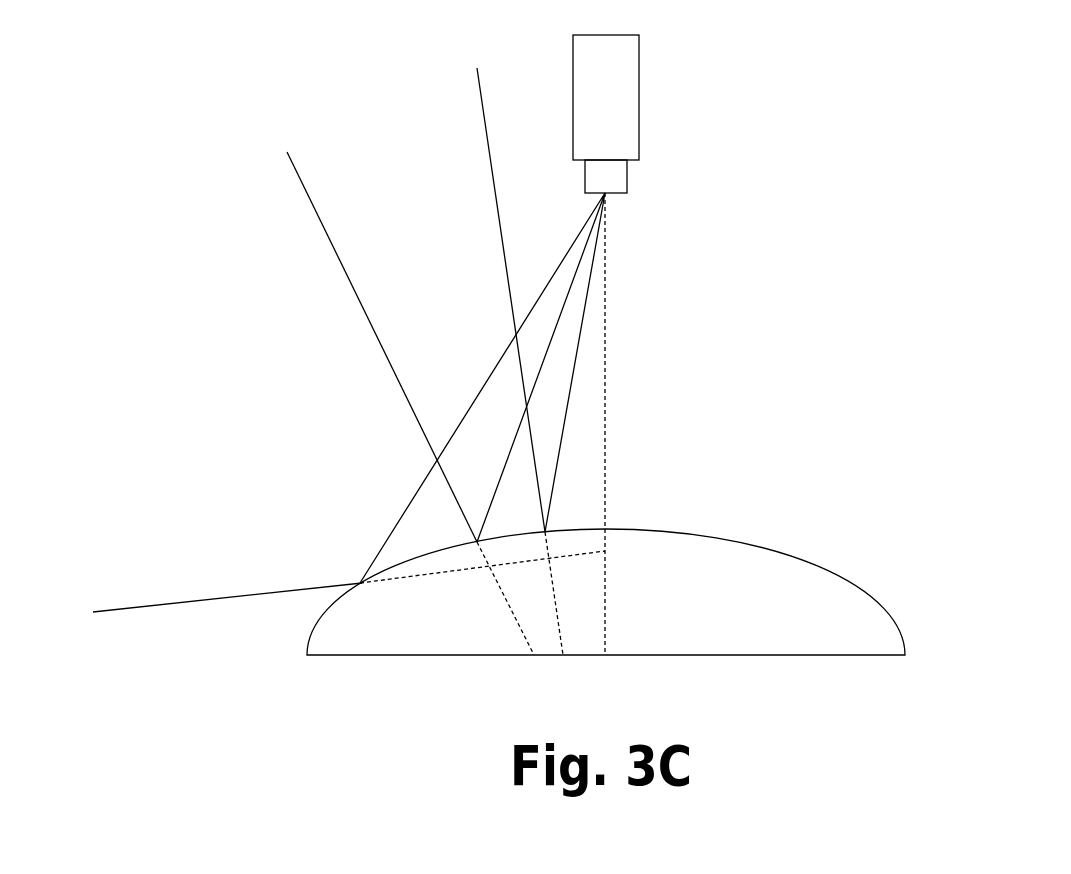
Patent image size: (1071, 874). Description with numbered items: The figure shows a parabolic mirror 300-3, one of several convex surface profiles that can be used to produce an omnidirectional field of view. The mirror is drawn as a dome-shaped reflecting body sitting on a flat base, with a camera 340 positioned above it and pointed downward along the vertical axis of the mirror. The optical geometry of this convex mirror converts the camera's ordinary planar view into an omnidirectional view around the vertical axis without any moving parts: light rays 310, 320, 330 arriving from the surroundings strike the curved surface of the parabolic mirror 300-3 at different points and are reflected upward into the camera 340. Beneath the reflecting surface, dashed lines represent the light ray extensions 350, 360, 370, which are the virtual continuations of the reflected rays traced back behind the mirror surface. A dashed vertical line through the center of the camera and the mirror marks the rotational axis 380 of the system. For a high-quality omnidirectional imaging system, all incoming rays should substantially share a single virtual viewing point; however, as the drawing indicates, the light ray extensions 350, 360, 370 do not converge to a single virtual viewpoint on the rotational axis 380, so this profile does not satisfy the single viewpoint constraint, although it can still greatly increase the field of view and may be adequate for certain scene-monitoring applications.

The parabolic mirror 300-3 is at (430, 655).
The light ray 310 is at (203, 606).
The light ray 320 is at (367, 333).
The light ray 330 is at (501, 286).
The camera 340 is at (639, 97).
The light ray extension 350 is at (606, 551).
The light ray extension 360 is at (535, 655).
The light ray extension 370 is at (565, 655).
The rotational axis 380 is at (606, 343).